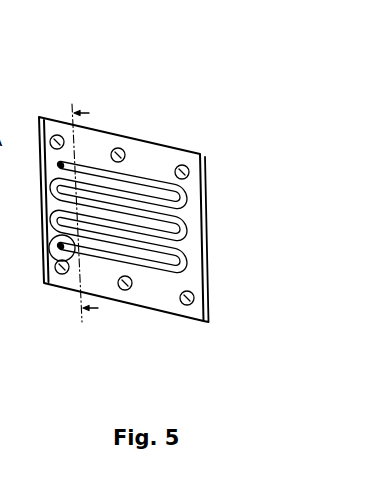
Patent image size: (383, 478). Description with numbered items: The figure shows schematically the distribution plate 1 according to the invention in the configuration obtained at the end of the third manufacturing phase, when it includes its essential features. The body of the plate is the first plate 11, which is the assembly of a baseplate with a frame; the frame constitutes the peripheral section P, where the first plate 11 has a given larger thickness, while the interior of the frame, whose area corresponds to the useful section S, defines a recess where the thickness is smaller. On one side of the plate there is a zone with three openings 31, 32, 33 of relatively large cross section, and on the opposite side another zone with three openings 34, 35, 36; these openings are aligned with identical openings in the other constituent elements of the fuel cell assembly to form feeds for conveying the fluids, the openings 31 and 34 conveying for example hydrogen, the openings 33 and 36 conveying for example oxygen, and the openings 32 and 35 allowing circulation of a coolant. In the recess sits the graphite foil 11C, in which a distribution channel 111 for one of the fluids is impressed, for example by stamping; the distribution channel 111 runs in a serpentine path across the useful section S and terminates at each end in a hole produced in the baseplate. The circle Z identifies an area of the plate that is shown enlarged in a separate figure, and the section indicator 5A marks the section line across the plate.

The distribution plate 1 is at (198, 190).
The first plate 11 is at (155, 164).
The graphite foil 11C is at (78, 243).
The distribution channel 111 is at (167, 216).
The useful section S is at (170, 246).
The peripheral section P is at (198, 271).
The circle Z is at (50, 252).
The section line 5A is at (93, 224).
The opening 31 is at (58, 135).
The opening 32 is at (119, 148).
The opening 33 is at (182, 165).
The opening 34 is at (61, 275).
The opening 35 is at (126, 291).
The opening 36 is at (189, 305).